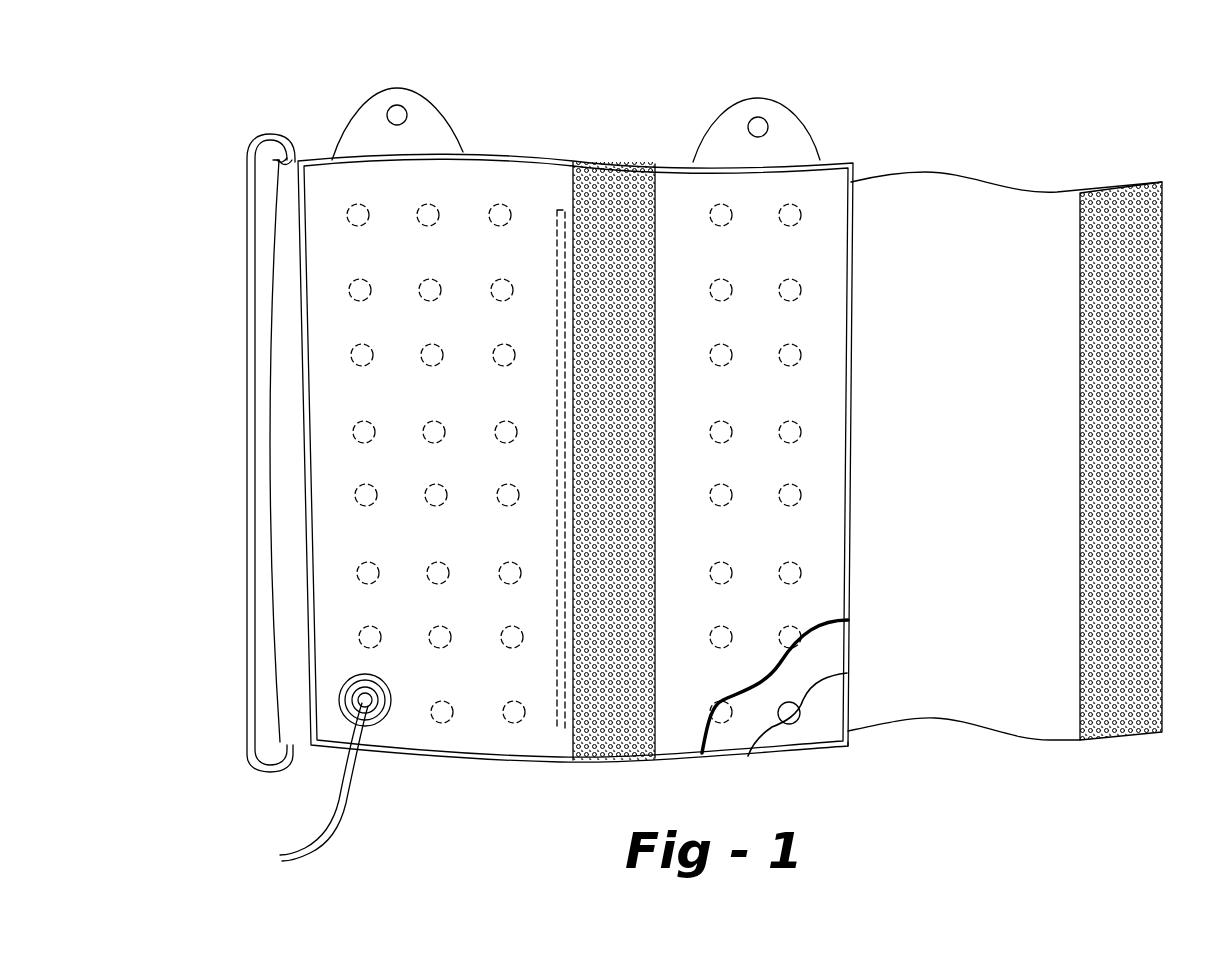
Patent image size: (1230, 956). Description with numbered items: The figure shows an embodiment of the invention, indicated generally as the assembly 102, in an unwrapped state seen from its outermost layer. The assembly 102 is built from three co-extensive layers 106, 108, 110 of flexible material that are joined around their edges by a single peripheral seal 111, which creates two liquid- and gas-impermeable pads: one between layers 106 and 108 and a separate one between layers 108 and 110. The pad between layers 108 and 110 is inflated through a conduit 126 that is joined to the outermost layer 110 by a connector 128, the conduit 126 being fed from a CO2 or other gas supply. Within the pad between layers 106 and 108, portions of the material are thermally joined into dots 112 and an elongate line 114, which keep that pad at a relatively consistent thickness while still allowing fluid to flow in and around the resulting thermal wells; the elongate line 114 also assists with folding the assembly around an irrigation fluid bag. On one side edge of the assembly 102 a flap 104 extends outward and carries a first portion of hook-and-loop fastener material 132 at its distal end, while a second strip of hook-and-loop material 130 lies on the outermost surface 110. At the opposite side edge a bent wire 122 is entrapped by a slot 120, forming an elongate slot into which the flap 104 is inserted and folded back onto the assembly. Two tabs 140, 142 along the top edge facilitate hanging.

The assembly 102 is at (616, 92).
The flap 104 is at (968, 206).
The layer 106 is at (810, 737).
The layer 108 is at (828, 657).
The layer 110 is at (822, 597).
The peripheral seal 111 is at (853, 405).
The dots 112 is at (725, 352).
The elongate lines 114 is at (560, 210).
The slot 120 is at (288, 205).
The bent wire 122 is at (245, 268).
The conduit 126 is at (333, 817).
The connector 128 is at (390, 715).
The hook-and-loop material 130 is at (585, 161).
The hook-and-loop fastener material 132 is at (1127, 191).
The tab 140 is at (377, 105).
The tab 142 is at (800, 133).